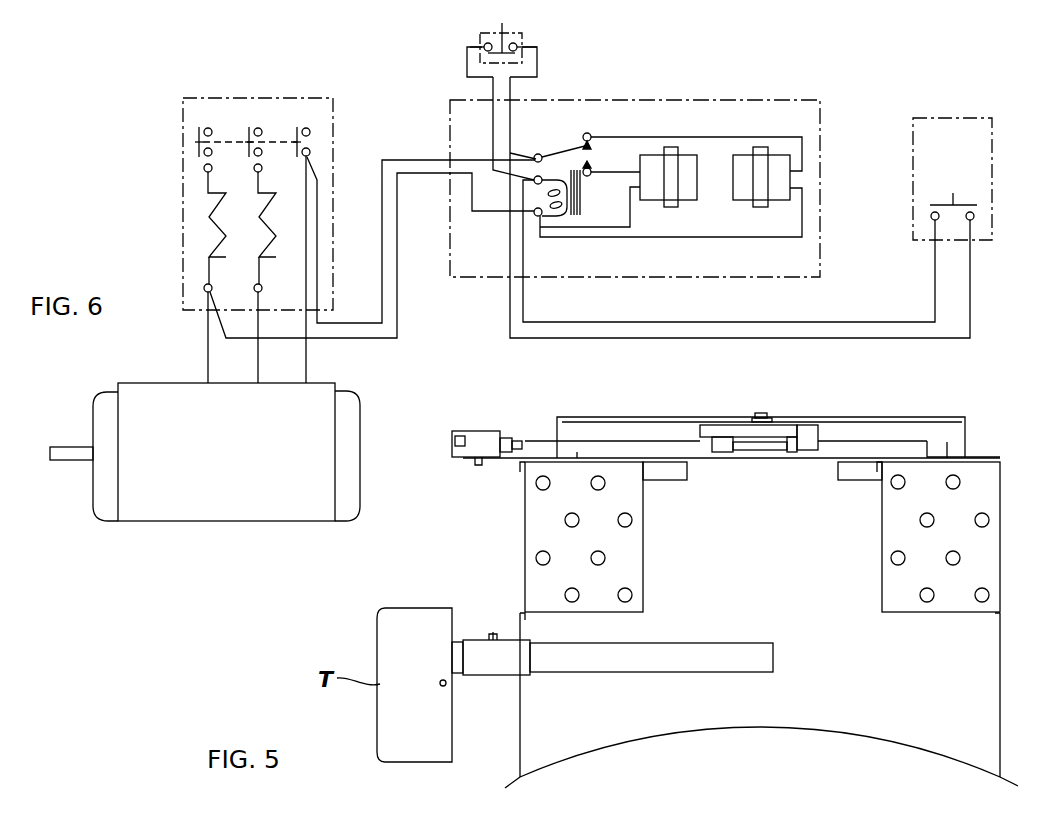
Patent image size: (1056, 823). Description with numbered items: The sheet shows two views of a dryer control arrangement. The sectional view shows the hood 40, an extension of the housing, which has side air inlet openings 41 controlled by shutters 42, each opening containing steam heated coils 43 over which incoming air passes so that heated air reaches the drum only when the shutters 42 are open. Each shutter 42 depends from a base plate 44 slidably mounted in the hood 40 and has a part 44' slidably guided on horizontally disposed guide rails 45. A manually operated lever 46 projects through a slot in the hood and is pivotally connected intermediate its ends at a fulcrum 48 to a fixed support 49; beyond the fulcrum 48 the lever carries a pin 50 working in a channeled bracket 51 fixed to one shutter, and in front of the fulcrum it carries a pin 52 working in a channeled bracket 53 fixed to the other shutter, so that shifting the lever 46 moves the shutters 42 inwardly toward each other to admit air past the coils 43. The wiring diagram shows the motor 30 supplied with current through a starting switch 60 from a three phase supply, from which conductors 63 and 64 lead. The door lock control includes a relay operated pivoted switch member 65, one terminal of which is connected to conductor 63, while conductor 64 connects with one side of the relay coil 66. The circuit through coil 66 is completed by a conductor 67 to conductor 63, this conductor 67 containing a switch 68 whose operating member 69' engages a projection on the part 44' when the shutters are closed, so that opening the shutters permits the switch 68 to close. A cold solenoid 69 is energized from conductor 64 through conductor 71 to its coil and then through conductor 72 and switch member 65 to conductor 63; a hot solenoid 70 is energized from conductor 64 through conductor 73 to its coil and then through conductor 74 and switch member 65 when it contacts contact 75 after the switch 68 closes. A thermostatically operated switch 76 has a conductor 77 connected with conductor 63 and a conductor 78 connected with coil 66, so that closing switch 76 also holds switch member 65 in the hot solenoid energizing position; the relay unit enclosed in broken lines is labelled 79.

In FIG. 6, the motor 30 is at (181, 384).
In FIG. 5, the hood 40 is at (1003, 644).
In FIG. 5, the air inlet openings 41 is at (523, 548).
In FIG. 5, the shutters 42 is at (643, 548).
In FIG. 5, the steam heated coils 43 is at (595, 553).
In FIG. 5, the base plate 44 is at (731, 438).
In FIG. 5, the part of base plate 44' is at (612, 433).
In FIG. 5, the guide rails 45 is at (952, 452).
In FIG. 5, the manually operated lever 46 is at (783, 427).
In FIG. 5, the fulcrum 48 is at (765, 413).
In FIG. 5, the fixed support 49 is at (940, 416).
In FIG. 5, the pin 50 is at (715, 452).
In FIG. 5, the channeled bracket 51 is at (738, 452).
In FIG. 5, the pin 52 is at (800, 450).
In FIG. 5, the channeled bracket 53 is at (782, 452).
In FIG. 6, the starting switch 60 is at (183, 224).
In FIG. 6, the conductor 63 is at (379, 233).
In FIG. 6, the conductor 64 is at (397, 233).
In FIG. 6, the relay operated pivoted switch member 65 is at (569, 150).
In FIG. 6, the relay coil 66 is at (555, 220).
In FIG. 6, the conductor 67 is at (530, 88).
In FIG. 6, the switch 68 is at (537, 64).
In FIG. 5, the switch 68 is at (472, 430).
In FIG. 6, the cold solenoid 69 is at (646, 125).
In FIG. 5, the operating member 69' is at (504, 418).
In FIG. 6, the hot solenoid 70 is at (672, 205).
In FIG. 6, the conductor 71 is at (697, 238).
In FIG. 6, the conductor 72 is at (637, 135).
In FIG. 6, the conductor 73 is at (587, 223).
In FIG. 6, the conductor 74 is at (592, 167).
In FIG. 6, the contact 75 is at (589, 177).
In FIG. 6, the thermostatically operated switch 76 is at (952, 210).
In FIG. 6, the conductor 77 is at (875, 338).
In FIG. 6, the conductor 78 is at (875, 322).
In FIG. 6, the relay unit 79 is at (717, 100).